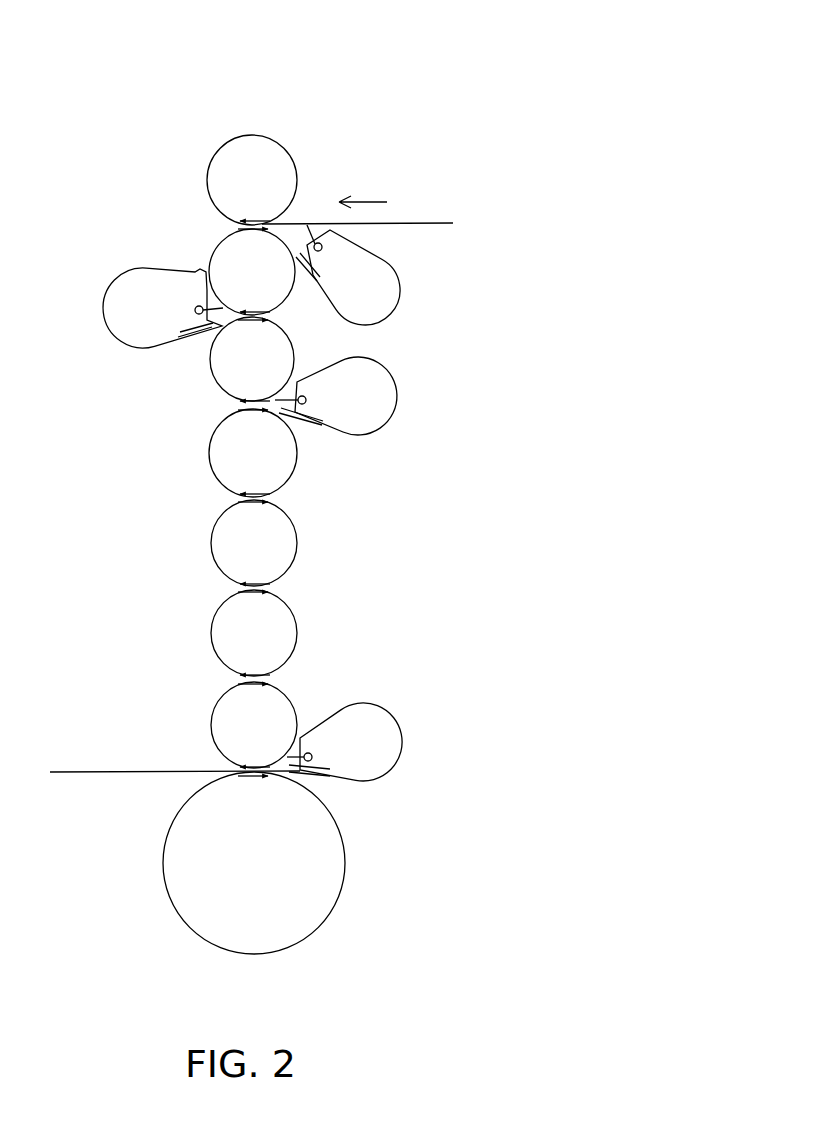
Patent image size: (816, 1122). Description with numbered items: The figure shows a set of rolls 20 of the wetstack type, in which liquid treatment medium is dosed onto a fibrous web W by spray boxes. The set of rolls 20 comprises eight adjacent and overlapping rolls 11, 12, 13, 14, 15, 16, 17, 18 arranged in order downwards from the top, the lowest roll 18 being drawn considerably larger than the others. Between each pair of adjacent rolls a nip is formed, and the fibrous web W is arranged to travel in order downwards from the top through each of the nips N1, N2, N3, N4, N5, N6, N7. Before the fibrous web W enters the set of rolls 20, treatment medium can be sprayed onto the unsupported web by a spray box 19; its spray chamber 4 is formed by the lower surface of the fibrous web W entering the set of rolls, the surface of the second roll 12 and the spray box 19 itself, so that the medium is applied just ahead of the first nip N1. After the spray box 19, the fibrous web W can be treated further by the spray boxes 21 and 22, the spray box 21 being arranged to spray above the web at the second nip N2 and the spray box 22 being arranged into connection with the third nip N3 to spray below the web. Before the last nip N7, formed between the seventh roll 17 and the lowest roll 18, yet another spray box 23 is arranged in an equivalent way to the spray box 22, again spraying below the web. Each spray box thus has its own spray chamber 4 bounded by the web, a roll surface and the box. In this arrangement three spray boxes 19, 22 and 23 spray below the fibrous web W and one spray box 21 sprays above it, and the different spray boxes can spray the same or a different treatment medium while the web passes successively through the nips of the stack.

The set of rolls 20 is at (356, 73).
The fibrous web W is at (408, 223).
The roll 11 is at (286, 160).
The second roll 12 is at (220, 253).
The roll 13 is at (285, 361).
The roll 14 is at (223, 455).
The roll 15 is at (288, 543).
The roll 16 is at (282, 633).
The roll 17 is at (283, 716).
The roll 18 is at (333, 892).
The spray chamber 4 is at (293, 233).
The spray box 19 is at (393, 290).
The spray box 21 is at (100, 333).
The spray box 22 is at (392, 388).
The spray box 23 is at (392, 730).
The nip N1 is at (203, 220).
The nip N2 is at (190, 353).
The nip N3 is at (214, 407).
The nip N4 is at (214, 498).
The nip N5 is at (214, 588).
The nip N6 is at (214, 682).
The nip N7 is at (196, 778).